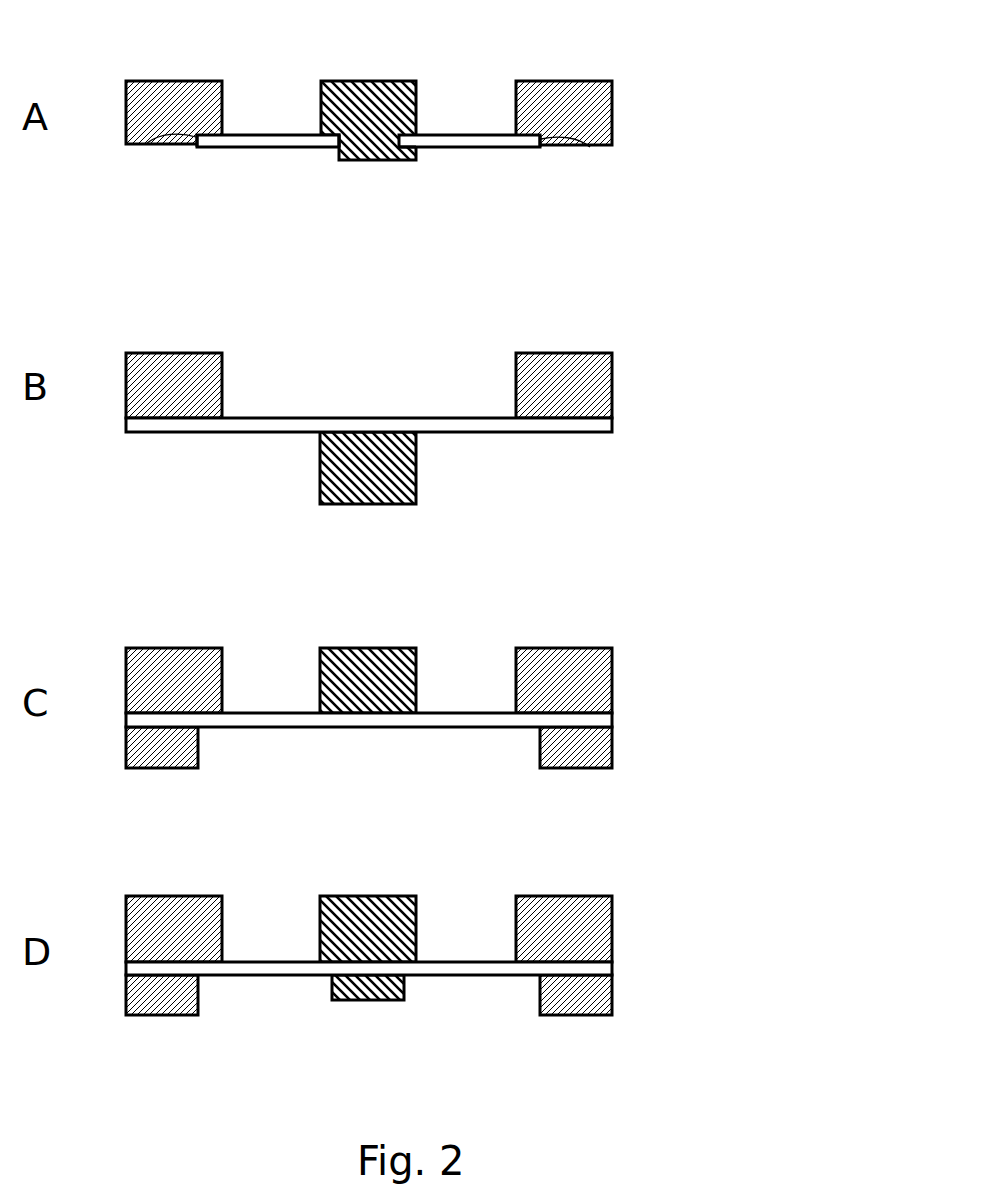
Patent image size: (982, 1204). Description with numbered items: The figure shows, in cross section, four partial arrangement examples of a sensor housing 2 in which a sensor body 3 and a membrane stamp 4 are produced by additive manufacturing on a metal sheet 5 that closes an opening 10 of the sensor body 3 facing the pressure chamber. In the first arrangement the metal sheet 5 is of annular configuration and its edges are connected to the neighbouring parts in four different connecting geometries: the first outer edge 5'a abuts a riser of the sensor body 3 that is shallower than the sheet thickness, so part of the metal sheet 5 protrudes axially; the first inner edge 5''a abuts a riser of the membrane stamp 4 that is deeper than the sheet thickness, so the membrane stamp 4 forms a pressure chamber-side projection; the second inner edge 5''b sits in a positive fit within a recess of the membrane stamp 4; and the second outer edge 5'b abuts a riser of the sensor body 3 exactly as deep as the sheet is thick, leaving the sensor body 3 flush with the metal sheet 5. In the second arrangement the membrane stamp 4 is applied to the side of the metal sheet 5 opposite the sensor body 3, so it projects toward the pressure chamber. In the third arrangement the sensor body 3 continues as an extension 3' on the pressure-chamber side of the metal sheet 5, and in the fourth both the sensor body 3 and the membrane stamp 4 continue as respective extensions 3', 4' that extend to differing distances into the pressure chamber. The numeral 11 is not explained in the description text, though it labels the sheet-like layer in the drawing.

The sensor housing 2 is at (102, 68).
The sensor body 3 is at (396, 521).
The extension of the sensor body 3' is at (400, 871).
The membrane stamp 4 is at (396, 521).
The extension of the membrane stamp 4' is at (403, 992).
The metal sheet 5 is at (375, 553).
The first outer edge 5'a is at (217, 177).
The second outer edge 5'b is at (553, 177).
The first inner edge 5''a is at (349, 177).
The second inner edge 5''b is at (423, 183).
The opening 10 is at (258, 122).
The film / membrane 11 is at (268, 150).